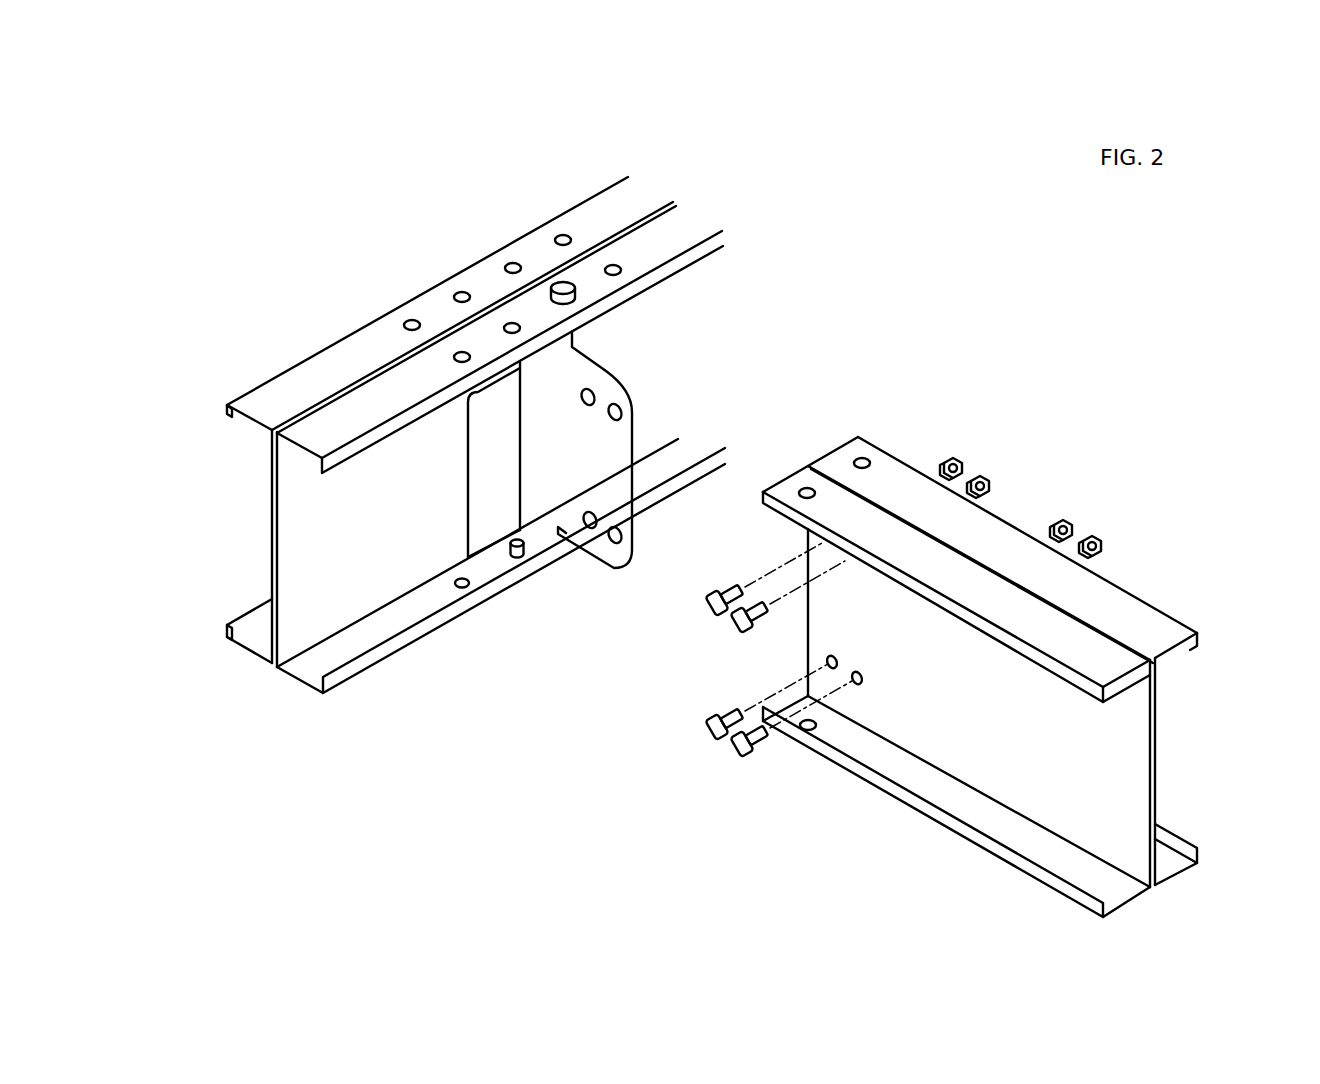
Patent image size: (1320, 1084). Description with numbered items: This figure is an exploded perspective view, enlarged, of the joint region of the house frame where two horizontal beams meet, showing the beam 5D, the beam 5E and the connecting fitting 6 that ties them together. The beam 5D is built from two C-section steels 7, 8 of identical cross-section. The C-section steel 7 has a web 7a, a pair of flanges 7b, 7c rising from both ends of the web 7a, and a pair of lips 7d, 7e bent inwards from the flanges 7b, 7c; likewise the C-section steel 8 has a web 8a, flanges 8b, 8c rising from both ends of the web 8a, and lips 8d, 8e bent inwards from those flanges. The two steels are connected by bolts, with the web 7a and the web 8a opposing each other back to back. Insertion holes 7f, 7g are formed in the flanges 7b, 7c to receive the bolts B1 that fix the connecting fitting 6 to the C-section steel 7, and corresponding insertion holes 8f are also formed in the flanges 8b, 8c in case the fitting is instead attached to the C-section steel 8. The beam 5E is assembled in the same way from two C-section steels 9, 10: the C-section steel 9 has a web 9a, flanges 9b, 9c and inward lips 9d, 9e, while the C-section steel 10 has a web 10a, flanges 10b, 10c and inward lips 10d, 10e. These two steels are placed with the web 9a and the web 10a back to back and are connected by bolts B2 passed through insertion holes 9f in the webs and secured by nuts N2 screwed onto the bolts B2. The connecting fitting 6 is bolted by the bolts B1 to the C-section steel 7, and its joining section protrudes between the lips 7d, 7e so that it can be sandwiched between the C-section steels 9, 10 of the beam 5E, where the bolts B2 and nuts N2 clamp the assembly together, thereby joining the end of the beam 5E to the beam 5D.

The beam 5D is at (760, 160).
The beam 5E is at (832, 360).
The connecting fitting 6 is at (628, 349).
The C-section steel 7 is at (712, 210).
The web 7a is at (290, 505).
The flange 7b is at (360, 415).
The flange 7c is at (332, 642).
The lip 7d is at (355, 450).
The lip 7e is at (396, 645).
The insertion hole 7f is at (560, 286).
The insertion hole 7g is at (520, 556).
The C-section steel 8 is at (660, 179).
The web 8a is at (270, 470).
The flange 8b is at (285, 385).
The flange 8c is at (256, 637).
The lip 8d is at (224, 408).
The lip 8e is at (226, 630).
The insertion hole 8f is at (458, 291).
The C-section steel 9 is at (779, 474).
The web 9a is at (1132, 738).
The flange 9b is at (1078, 645).
The flange 9c is at (1067, 855).
The lip 9d is at (1052, 672).
The lip 9e is at (1000, 840).
The insertion hole 9f is at (860, 674).
The C-section steel 10 is at (823, 449).
The web 10a is at (1160, 700).
The flange 10b is at (1148, 610).
The flange 10c is at (1196, 878).
The lip 10d is at (1203, 640).
The lip 10e is at (1200, 848).
The bolt B1 is at (537, 225).
The bolt B2 is at (740, 624).
The nut N2 is at (985, 480).